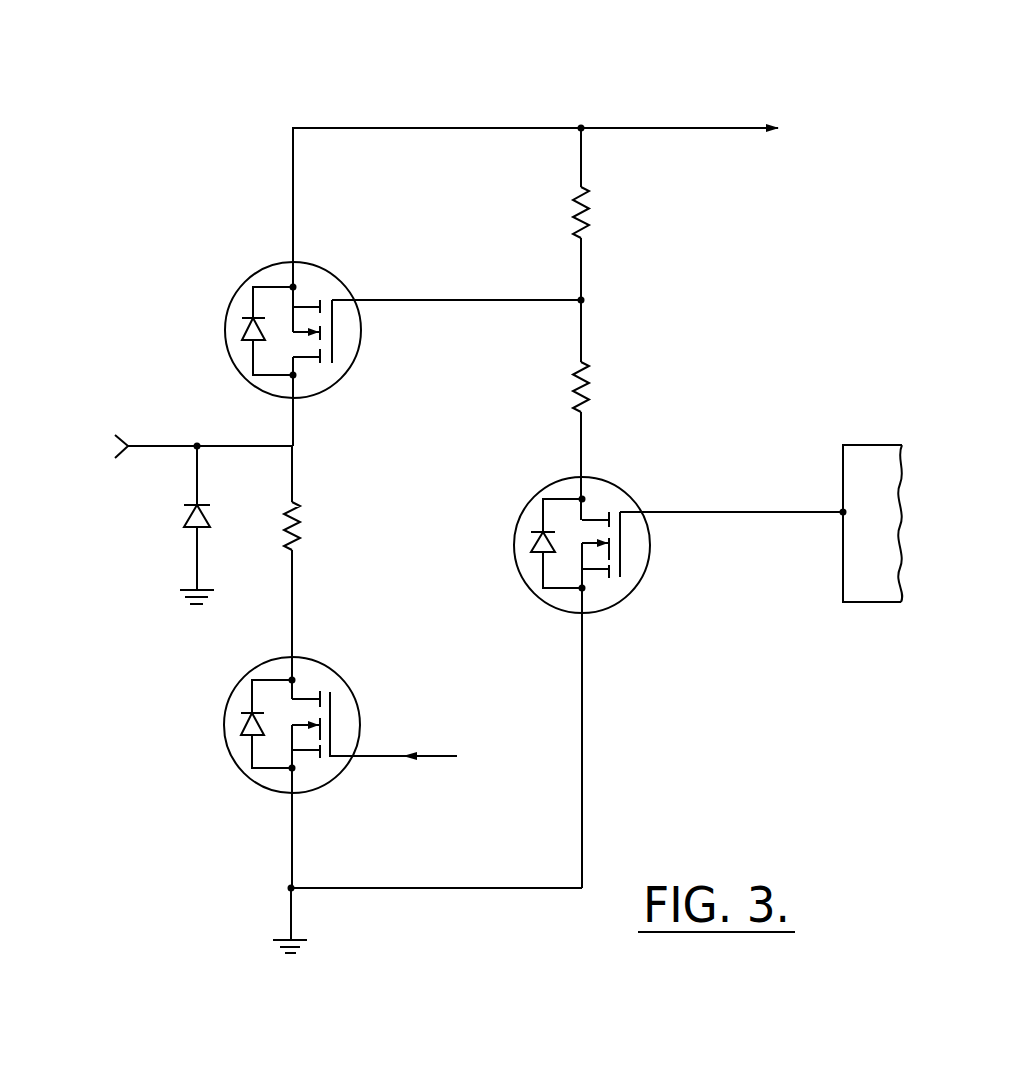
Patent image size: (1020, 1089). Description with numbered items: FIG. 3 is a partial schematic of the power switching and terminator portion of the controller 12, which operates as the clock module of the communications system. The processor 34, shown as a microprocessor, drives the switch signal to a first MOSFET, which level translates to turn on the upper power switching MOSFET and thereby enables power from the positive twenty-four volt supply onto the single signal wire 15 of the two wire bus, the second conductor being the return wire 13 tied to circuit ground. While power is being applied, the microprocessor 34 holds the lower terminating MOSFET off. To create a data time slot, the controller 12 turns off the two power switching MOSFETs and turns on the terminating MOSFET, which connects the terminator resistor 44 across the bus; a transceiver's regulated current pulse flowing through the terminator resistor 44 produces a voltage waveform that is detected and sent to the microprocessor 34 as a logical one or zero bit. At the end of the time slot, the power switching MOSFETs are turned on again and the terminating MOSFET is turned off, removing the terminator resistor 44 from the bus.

The controller 12 is at (539, 95).
The single signal wire 15 is at (160, 426).
The return wire 13 is at (362, 699).
The terminator resistor 44 is at (297, 507).
The processor 34 is at (761, 540).